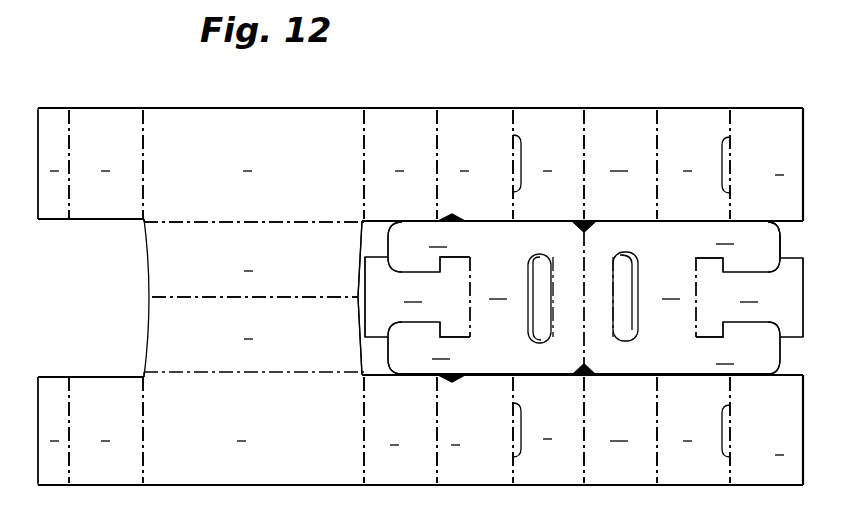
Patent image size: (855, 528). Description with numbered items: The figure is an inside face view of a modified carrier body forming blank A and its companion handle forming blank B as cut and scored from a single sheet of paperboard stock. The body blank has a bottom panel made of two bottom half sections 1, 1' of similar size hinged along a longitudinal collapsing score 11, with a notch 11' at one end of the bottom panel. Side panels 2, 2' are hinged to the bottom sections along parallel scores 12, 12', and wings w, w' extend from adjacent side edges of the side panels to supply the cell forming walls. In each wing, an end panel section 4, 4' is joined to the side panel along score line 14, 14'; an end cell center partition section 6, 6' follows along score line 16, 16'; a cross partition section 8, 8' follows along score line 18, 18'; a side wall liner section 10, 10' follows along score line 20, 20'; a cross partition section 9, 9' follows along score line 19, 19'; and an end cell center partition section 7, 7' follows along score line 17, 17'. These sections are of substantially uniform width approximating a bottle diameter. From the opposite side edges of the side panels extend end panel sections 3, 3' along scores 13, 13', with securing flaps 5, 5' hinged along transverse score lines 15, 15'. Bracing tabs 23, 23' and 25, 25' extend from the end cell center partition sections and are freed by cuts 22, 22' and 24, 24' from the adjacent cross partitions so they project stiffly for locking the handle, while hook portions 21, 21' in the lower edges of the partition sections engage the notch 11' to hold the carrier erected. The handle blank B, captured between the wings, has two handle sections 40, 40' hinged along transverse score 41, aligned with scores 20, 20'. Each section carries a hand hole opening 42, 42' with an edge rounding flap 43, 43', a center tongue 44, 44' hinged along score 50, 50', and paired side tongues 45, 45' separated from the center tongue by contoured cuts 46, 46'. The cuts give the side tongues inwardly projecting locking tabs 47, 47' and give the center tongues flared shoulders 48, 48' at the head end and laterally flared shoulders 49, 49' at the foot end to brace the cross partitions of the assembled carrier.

The carrier body forming blank A is at (318, 107).
The handle forming blank B is at (785, 249).
The wing w is at (814, 164).
The wing w' is at (433, 428).
The bottom half section 1 is at (251, 298).
The bottom half section 1' is at (251, 331).
The side panel 2 is at (253, 164).
The side panel 2' is at (253, 430).
The end panel section 3 is at (106, 164).
The end panel section 3' is at (106, 430).
The end panel section 4 is at (400, 164).
The end panel section 4' is at (400, 430).
The securing flap 5 is at (53, 164).
The securing flap 5' is at (53, 430).
The end cell center partition section 6 is at (475, 164).
The end cell center partition section 6' is at (475, 430).
The end cell center partition section 7 is at (766, 164).
The end cell center partition section 7' is at (766, 430).
The cross partition section 8 is at (548, 164).
The cross partition section 8' is at (548, 430).
The cross partition section 9 is at (693, 164).
The cross partition section 9' is at (693, 430).
The side wall liner section 10 is at (620, 164).
The side wall liner section 10' is at (620, 430).
The collapsing score 11 is at (255, 286).
The notch 11' is at (339, 298).
The score 12 is at (254, 208).
The score 12' is at (254, 387).
The score 13 is at (134, 152).
The score 13' is at (136, 444).
The score line 14 is at (373, 150).
The score line 14' is at (382, 444).
The transverse score line 15 is at (80, 152).
The transverse score line 15' is at (86, 444).
The score line 16 is at (427, 150).
The score line 16' is at (428, 444).
The score line 17 is at (713, 150).
The score line 17' is at (722, 444).
The score line 18 is at (533, 150).
The score line 18' is at (520, 444).
The score line 19 is at (647, 150).
The score line 19' is at (650, 444).
The score line 20 is at (599, 150).
The score line 20' is at (602, 444).
The hook portion 21 is at (438, 209).
The hook portion 21' is at (438, 390).
The cut 22 is at (504, 177).
The cut 22' is at (504, 443).
The bracing tab 23 is at (504, 149).
The bracing tab 23' is at (504, 416).
The cut 24 is at (739, 176).
The cut 24' is at (742, 440).
The bracing tab 25 is at (739, 151).
The bracing tab 25' is at (742, 418).
The handle section 40 is at (580, 298).
The handle section 40' is at (634, 298).
The transverse score 41 is at (580, 337).
The hand hole opening 42 is at (535, 286).
The hand hole opening 42' is at (638, 287).
The edge rounding flap 43 is at (561, 297).
The edge rounding flap 43' is at (606, 297).
The center tongue 44 is at (417, 297).
The center tongue 44' is at (749, 297).
The side tongue 45 is at (429, 298).
The side tongue 45' is at (738, 298).
The cut 46 is at (385, 297).
The cut 46' is at (787, 297).
The locking tab 47 is at (404, 306).
The locking tab 47' is at (765, 300).
The flared shoulder 48 is at (467, 299).
The flared shoulder 48' is at (699, 303).
The laterally flared shoulder 49 is at (383, 298).
The laterally flared shoulder 49' is at (799, 298).
The transverse score 50 is at (484, 297).
The transverse score 50' is at (678, 297).